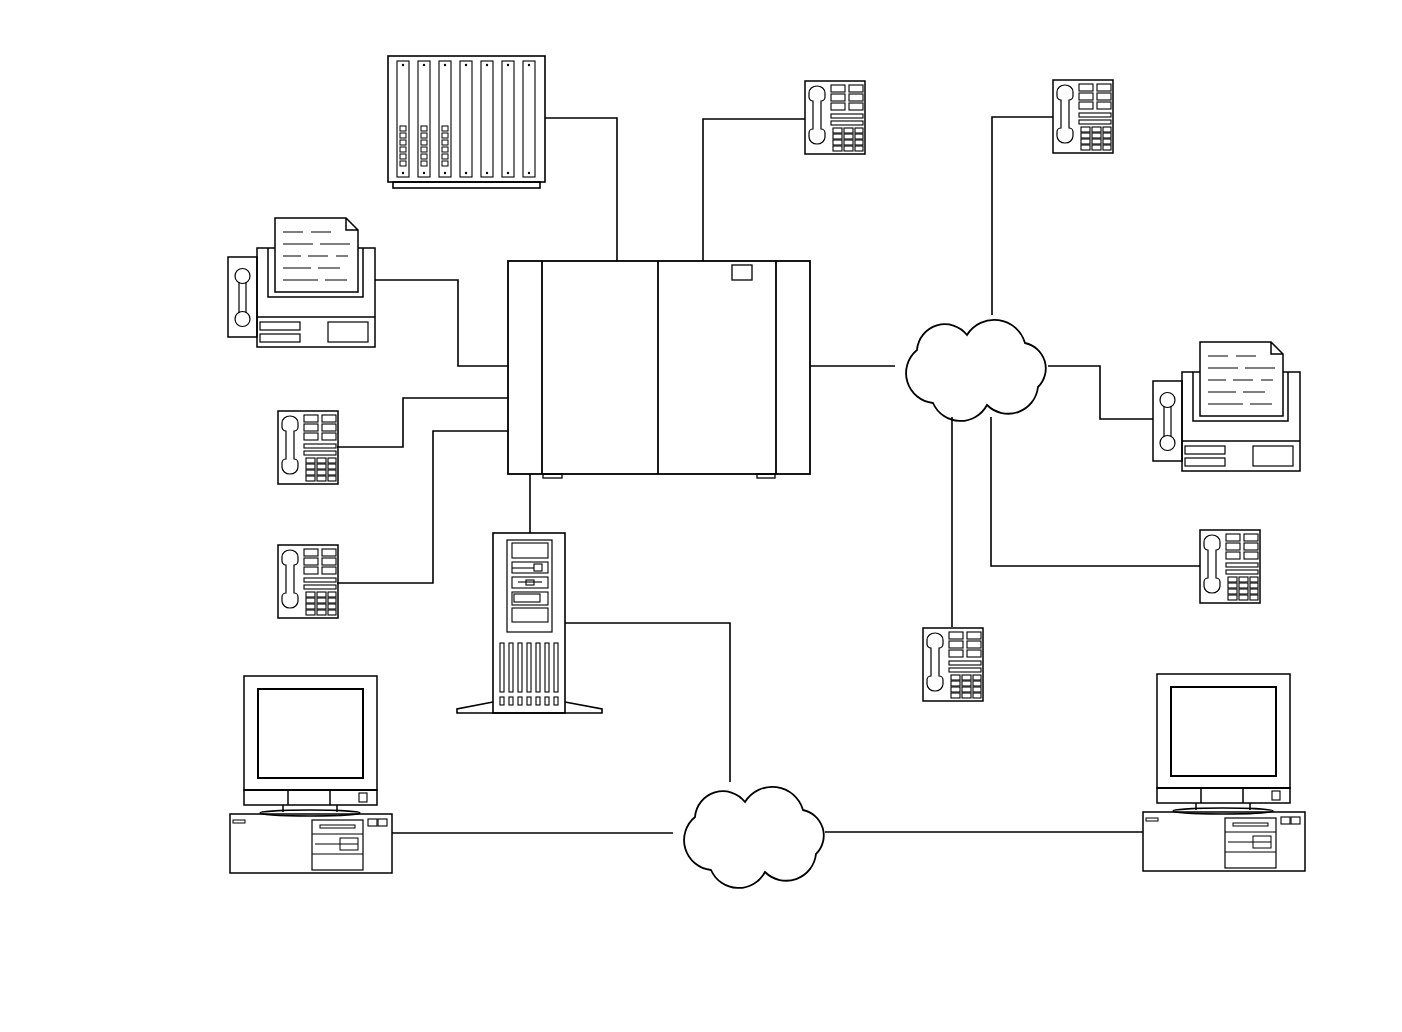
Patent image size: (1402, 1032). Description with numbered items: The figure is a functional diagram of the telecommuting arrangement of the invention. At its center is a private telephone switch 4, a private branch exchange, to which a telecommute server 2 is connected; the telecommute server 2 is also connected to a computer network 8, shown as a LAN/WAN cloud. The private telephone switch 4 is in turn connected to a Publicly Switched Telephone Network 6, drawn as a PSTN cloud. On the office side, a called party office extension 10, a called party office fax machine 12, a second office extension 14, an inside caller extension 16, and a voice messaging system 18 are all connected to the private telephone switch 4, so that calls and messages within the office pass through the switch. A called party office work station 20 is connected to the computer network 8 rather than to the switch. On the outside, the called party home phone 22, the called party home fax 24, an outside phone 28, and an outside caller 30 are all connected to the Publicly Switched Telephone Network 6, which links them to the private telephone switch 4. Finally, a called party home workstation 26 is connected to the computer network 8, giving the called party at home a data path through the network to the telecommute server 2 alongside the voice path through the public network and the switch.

The telecommute server 2 is at (565, 572).
The private telephone switch 4 is at (810, 431).
The Publicly Switched Telephone Network 6 is at (1012, 323).
The computer network 8 is at (792, 790).
The called party office extension 10 is at (277, 437).
The called party office fax machine 12 is at (228, 282).
The second office extension 14 is at (277, 570).
The inside caller extension 16 is at (867, 107).
The voice messaging system 18 is at (388, 102).
The called party office work station 20 is at (267, 747).
The called party home phone 22 is at (1261, 556).
The called party home fax 24 is at (1242, 342).
The called party home workstation 26 is at (1305, 820).
The outside phone 28 is at (922, 653).
The outside caller 30 is at (1115, 105).